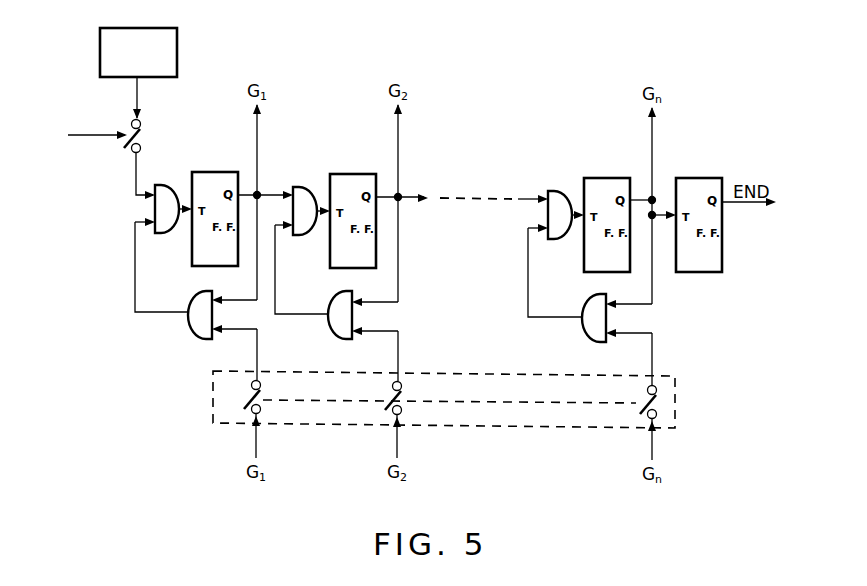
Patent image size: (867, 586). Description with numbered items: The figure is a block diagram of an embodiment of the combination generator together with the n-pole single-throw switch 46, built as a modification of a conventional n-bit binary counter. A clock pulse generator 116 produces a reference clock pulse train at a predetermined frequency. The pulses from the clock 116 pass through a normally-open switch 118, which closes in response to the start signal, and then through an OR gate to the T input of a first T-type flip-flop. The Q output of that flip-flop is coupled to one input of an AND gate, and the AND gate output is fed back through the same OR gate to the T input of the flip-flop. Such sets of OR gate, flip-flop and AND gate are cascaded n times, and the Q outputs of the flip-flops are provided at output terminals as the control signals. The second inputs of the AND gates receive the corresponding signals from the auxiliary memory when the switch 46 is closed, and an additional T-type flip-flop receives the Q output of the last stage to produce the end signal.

The clock pulse generator 116 is at (178, 52).
The normally-open switch 118 is at (147, 133).
The n-pole single-throw switch 46 is at (676, 401).